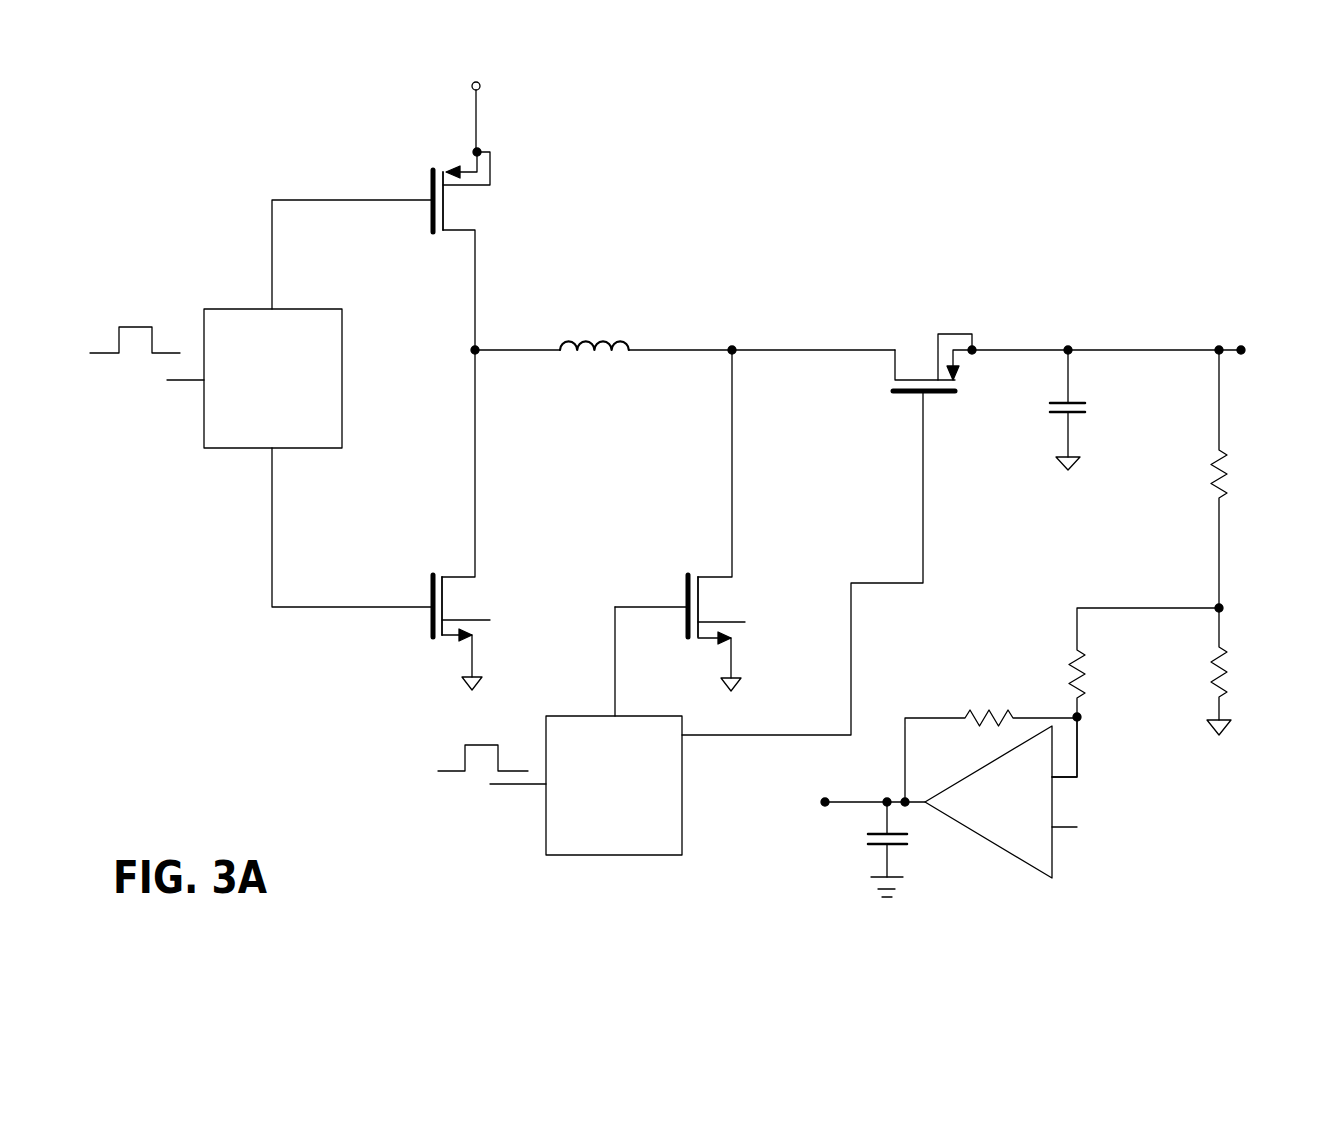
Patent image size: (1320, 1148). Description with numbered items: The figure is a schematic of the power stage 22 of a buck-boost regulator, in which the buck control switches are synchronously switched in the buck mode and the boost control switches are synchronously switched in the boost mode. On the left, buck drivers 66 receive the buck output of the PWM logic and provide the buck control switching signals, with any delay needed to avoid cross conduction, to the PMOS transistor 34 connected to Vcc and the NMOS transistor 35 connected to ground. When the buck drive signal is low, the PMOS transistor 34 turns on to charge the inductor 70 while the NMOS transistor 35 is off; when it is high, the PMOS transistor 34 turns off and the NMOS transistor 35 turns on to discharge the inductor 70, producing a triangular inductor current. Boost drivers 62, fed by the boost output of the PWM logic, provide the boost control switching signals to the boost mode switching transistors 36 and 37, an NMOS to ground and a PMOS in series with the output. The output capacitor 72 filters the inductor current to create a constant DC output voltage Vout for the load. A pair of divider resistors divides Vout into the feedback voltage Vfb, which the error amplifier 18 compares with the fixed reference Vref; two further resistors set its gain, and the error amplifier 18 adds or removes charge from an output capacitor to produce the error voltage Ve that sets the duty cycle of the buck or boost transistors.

The power stage 22 is at (1143, 179).
The PMOS transistor 34 is at (462, 233).
The NMOS transistor 35 is at (459, 574).
The boost mode switching transistor 36 is at (717, 575).
The boost mode switching transistor 37 is at (893, 368).
The boost drivers 62 is at (628, 856).
The buck drivers 66 is at (238, 307).
The inductor 70 is at (620, 336).
The output capacitor 72 is at (1080, 418).
The error amplifier 18 is at (1008, 856).